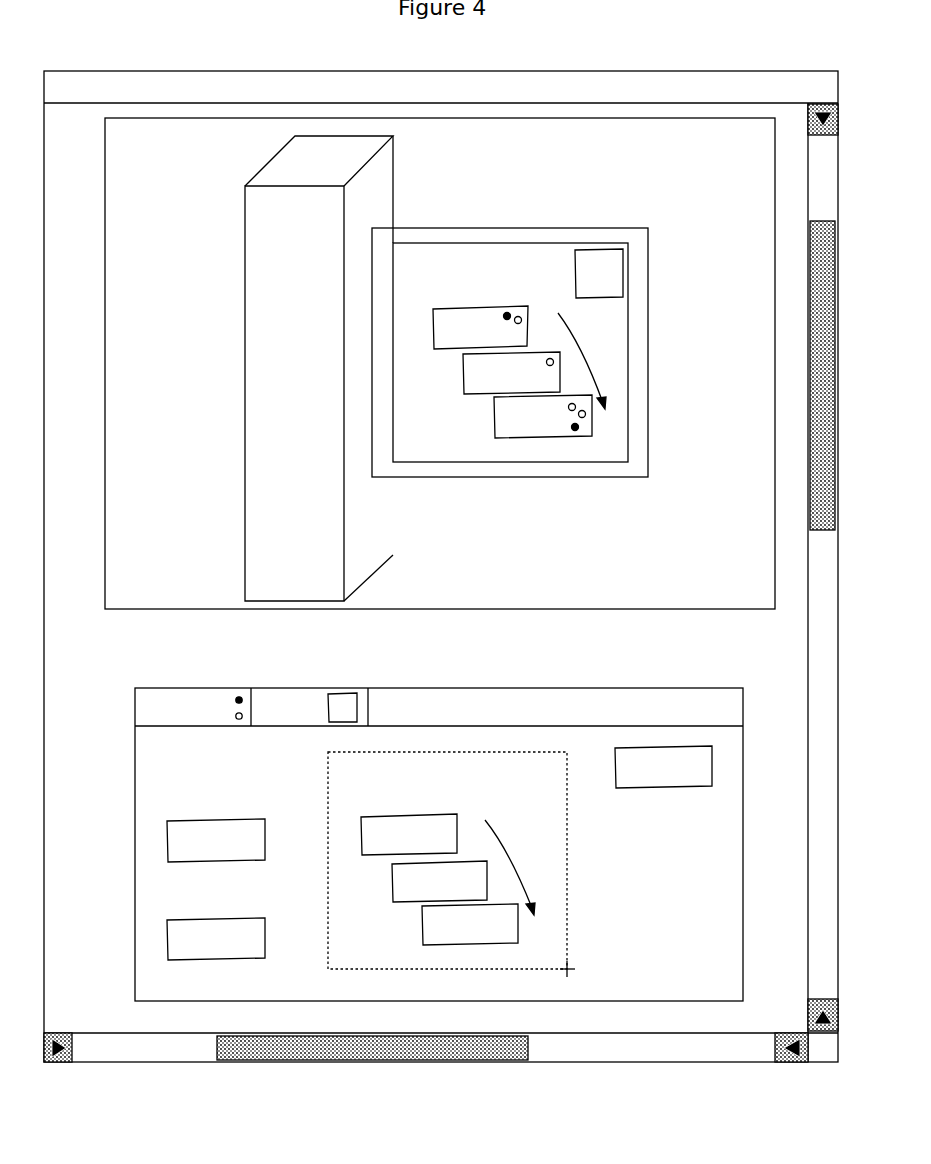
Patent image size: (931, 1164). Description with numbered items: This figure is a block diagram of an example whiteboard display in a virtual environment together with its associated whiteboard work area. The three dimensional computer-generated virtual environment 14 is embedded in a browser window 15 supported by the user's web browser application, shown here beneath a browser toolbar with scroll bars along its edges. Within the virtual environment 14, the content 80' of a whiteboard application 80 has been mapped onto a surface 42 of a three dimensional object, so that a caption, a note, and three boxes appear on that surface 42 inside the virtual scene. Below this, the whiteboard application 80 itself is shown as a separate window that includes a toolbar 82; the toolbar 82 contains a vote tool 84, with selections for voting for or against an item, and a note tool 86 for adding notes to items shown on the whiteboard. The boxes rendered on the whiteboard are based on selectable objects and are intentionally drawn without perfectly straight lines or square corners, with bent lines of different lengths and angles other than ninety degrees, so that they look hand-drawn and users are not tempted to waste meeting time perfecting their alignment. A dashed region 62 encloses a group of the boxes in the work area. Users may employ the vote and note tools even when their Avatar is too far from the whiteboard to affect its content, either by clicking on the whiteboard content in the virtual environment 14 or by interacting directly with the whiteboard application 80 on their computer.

The browser window 15 is at (554, 70).
The virtual environment 14 is at (440, 363).
The surface 42 is at (497, 227).
The content 80' is at (510, 331).
The whiteboard application 80 is at (439, 824).
The toolbar 82 is at (439, 692).
The vote tool 84 is at (217, 696).
The note tool 86 is at (321, 696).
The selection region 62 is at (567, 932).